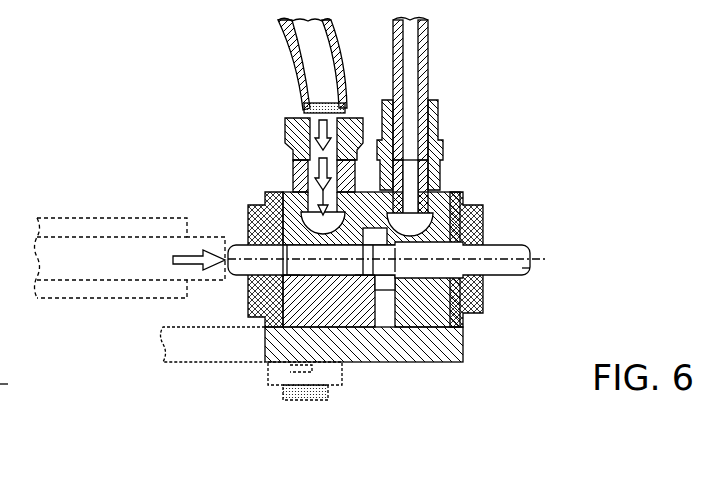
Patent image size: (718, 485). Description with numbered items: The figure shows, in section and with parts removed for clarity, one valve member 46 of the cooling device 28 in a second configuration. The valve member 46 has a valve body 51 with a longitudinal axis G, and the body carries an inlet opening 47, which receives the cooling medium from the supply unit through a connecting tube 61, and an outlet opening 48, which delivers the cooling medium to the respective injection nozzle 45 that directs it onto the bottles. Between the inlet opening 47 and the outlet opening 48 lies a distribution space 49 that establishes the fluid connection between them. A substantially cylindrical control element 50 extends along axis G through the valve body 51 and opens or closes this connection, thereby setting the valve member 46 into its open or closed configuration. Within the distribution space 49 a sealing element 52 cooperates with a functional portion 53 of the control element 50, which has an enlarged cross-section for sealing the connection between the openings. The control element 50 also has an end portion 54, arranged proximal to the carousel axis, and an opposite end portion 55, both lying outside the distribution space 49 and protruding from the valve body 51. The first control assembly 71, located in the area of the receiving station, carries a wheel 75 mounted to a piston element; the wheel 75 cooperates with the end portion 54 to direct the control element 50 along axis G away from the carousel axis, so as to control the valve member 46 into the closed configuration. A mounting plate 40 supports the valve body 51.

The cooling device 28 is at (0, 384).
The mounting plate 40 is at (210, 347).
The injection nozzle 45 is at (427, 60).
The valve member 46 is at (380, 266).
The inlet opening 47 is at (302, 226).
The outlet opening 48 is at (432, 230).
The distribution space 49 is at (385, 280).
The control element 50 is at (492, 240).
The valve body 51 is at (463, 323).
The sealing element 52 is at (360, 282).
The functional portion 53 is at (337, 272).
The end portion 54 is at (246, 238).
The end portion 55 is at (519, 268).
The tube 61 is at (303, 82).
The first control assembly 71 is at (133, 218).
The wheel 75 is at (210, 238).
The longitudinal axis G is at (541, 255).